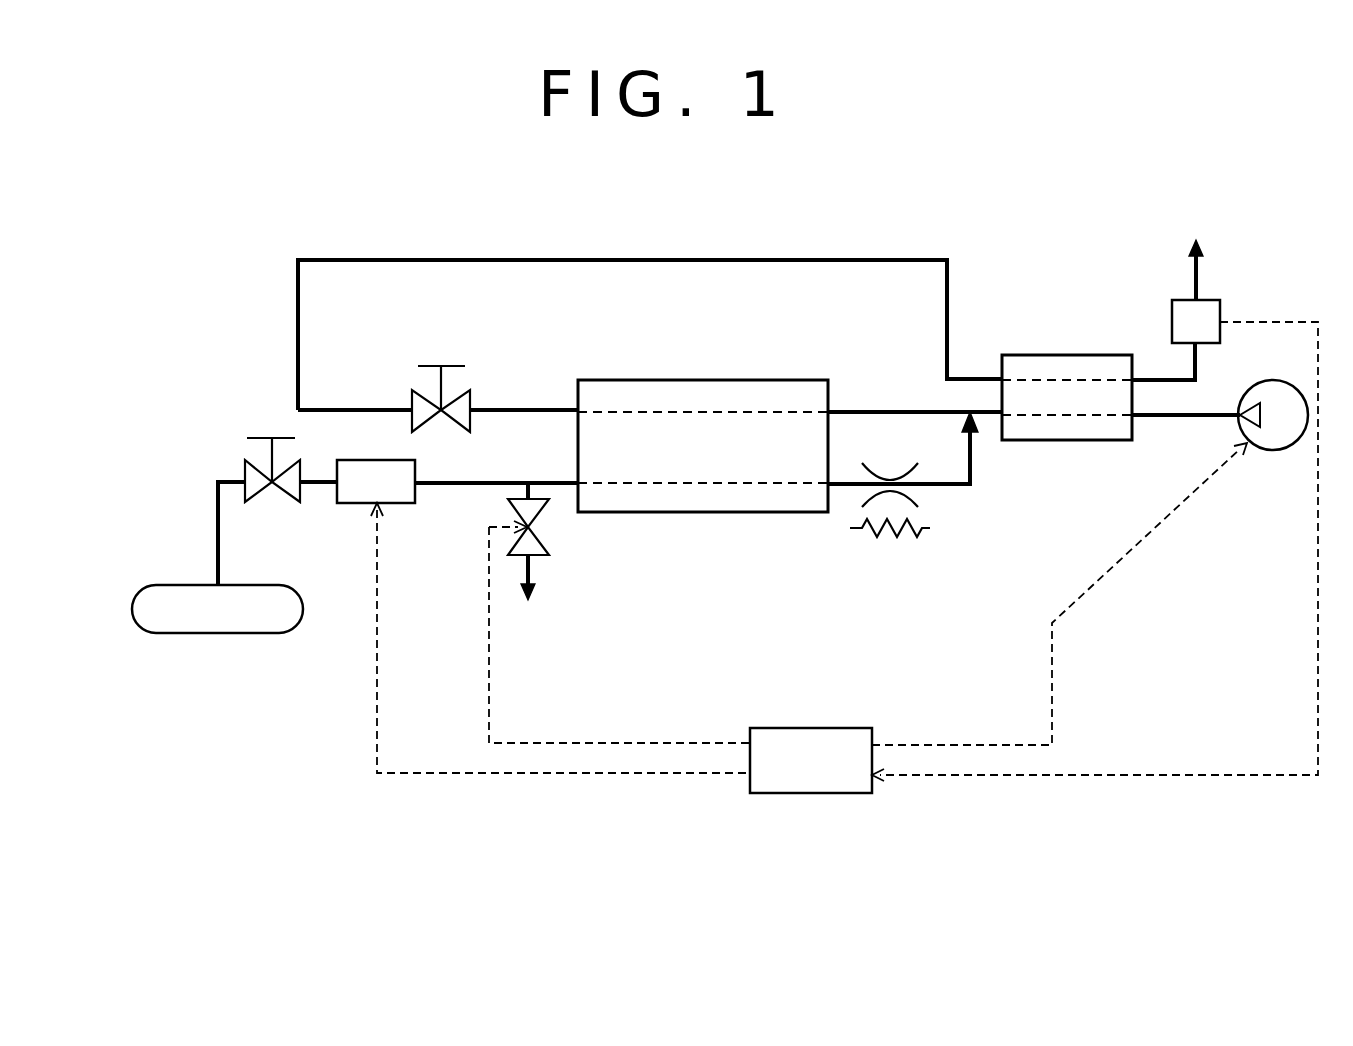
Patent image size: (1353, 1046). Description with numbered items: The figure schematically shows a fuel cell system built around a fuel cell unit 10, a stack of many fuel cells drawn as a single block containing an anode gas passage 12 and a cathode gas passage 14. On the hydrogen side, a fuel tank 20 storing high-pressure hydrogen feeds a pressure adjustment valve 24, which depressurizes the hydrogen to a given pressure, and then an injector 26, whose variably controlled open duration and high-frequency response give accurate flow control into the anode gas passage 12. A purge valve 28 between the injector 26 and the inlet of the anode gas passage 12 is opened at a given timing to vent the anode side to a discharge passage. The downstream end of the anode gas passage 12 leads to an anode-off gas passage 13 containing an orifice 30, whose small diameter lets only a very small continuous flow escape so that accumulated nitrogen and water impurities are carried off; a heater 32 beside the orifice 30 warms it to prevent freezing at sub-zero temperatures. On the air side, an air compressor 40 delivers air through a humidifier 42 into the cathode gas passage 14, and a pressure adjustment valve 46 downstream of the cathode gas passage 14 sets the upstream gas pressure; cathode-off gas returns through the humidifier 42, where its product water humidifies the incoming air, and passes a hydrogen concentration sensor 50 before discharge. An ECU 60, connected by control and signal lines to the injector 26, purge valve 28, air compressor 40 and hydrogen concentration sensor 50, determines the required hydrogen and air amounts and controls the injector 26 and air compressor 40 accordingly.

The fuel cell unit 10 is at (772, 512).
The anode gas passage 12 is at (680, 483).
The anode-off gas passage 13 is at (952, 488).
The cathode gas passage 14 is at (700, 412).
The fuel tank 20 is at (232, 585).
The pressure adjustment valve 24 is at (246, 464).
The injector 26 is at (420, 465).
The purge valve 28 is at (538, 538).
The orifice 30 is at (890, 470).
The heater 32 is at (890, 538).
The air compressor 40 is at (1278, 452).
The humidifier 42 is at (1015, 355).
The pressure adjustment valve 46 is at (425, 398).
The hydrogen concentration sensor 50 is at (1172, 325).
The ECU 60 is at (830, 793).